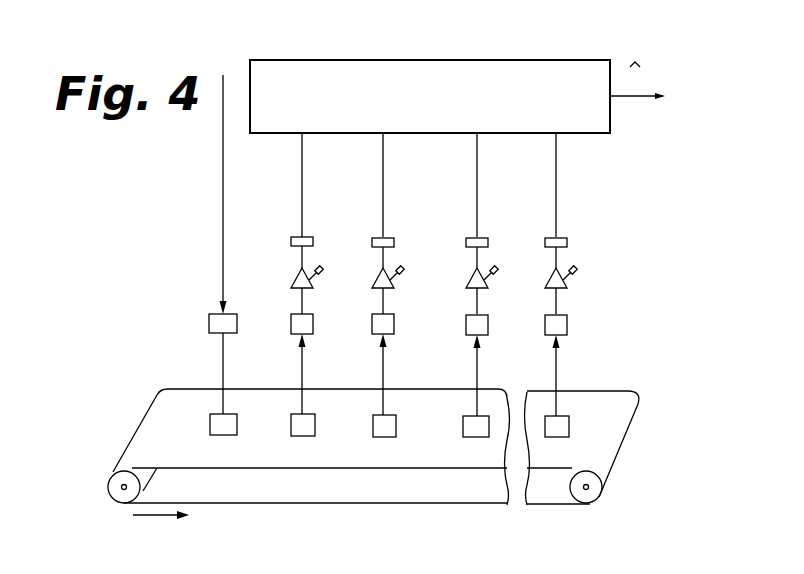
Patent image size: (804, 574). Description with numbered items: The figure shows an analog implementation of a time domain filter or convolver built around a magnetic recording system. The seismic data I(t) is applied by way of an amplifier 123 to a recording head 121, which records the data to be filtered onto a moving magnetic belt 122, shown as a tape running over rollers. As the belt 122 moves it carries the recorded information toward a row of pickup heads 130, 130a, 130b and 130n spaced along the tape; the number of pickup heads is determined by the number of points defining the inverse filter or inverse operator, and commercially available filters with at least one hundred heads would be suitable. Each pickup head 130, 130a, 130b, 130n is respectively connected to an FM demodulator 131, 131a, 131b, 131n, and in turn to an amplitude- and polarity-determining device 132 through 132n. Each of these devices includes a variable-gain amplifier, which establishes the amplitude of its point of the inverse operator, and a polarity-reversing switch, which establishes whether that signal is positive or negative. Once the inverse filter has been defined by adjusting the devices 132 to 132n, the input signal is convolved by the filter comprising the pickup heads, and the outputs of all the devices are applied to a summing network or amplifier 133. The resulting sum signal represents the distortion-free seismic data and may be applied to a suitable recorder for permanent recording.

The summing amplifier 133 is at (425, 60).
The amplitude- and polarity-determining device 132 is at (281, 223).
The amplitude- and polarity-determining device 132n is at (574, 223).
The FM demodulator 131 is at (292, 326).
The FM demodulator 131a is at (376, 320).
The FM demodulator 131b is at (471, 323).
The FM demodulator 131n is at (552, 325).
The amplifier 123 is at (209, 323).
The magnetic belt 122 is at (176, 407).
The recording head 121 is at (226, 425).
The pickup head 130 is at (302, 423).
The pickup head 130a is at (383, 424).
The pickup head 130b is at (470, 424).
The pickup head 130n is at (563, 425).